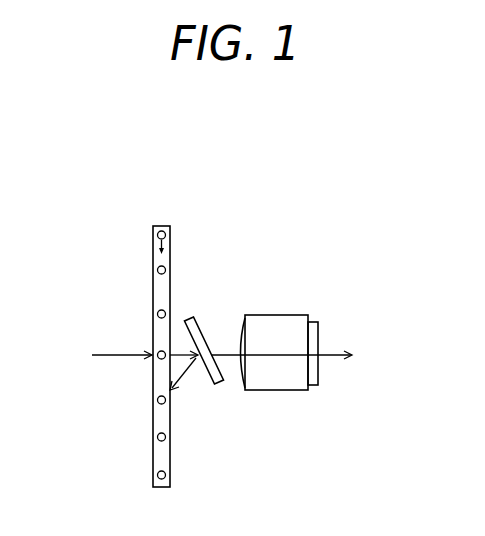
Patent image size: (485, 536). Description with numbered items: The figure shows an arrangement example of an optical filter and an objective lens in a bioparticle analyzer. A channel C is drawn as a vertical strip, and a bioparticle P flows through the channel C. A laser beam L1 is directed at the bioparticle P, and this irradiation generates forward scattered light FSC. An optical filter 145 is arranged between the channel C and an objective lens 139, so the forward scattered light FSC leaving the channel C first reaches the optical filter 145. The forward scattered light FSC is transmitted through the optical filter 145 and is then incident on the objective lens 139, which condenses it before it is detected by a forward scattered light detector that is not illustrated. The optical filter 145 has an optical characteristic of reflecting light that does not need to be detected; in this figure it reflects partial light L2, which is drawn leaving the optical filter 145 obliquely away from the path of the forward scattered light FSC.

The channel C is at (157, 226).
The bioparticle P is at (153, 238).
The laser beam L1 is at (134, 352).
The partial light L2 is at (180, 366).
The forward scattered light FSC is at (183, 352).
The optical filter 145 is at (193, 373).
The objective lens 139 is at (277, 390).